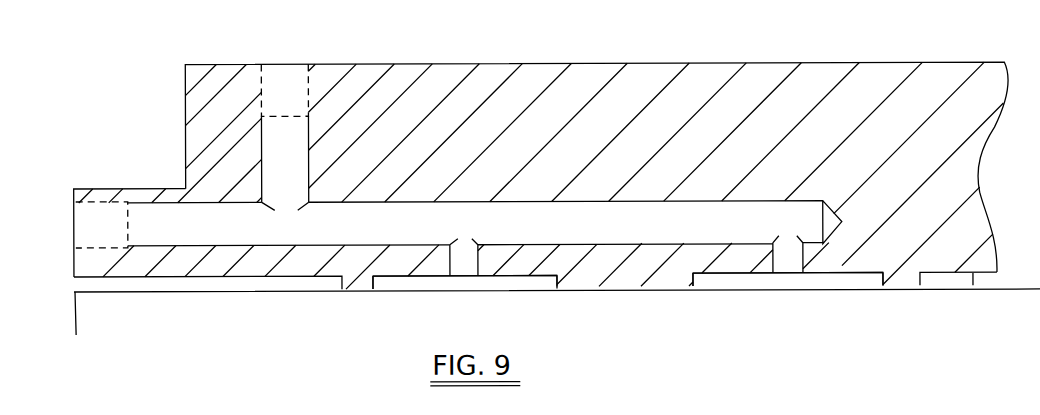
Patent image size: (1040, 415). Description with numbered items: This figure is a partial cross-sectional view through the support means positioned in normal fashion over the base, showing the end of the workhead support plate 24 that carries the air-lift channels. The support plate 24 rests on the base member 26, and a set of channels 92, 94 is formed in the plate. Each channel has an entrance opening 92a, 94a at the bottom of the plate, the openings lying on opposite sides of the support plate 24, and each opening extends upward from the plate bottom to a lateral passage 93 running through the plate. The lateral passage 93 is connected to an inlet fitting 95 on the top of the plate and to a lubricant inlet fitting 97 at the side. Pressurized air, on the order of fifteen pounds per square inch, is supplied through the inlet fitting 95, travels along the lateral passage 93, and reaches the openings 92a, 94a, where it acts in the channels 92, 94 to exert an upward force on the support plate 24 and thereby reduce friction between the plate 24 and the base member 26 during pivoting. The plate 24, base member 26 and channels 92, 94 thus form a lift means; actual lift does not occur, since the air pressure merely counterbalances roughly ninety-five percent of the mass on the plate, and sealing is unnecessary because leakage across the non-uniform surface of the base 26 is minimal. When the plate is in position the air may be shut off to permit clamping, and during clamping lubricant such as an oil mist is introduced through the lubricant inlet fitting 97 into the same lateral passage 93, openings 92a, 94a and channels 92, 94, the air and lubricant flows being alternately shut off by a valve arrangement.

The workhead support plate 24 is at (750, 85).
The base member 26 is at (252, 334).
The channel 92 is at (540, 286).
The opening 92a is at (467, 252).
The lateral passage 93 is at (358, 203).
The channel 94 is at (763, 284).
The opening 94a is at (797, 258).
The inlet fitting 95 is at (297, 52).
The lubricant inlet fitting 97 is at (62, 225).